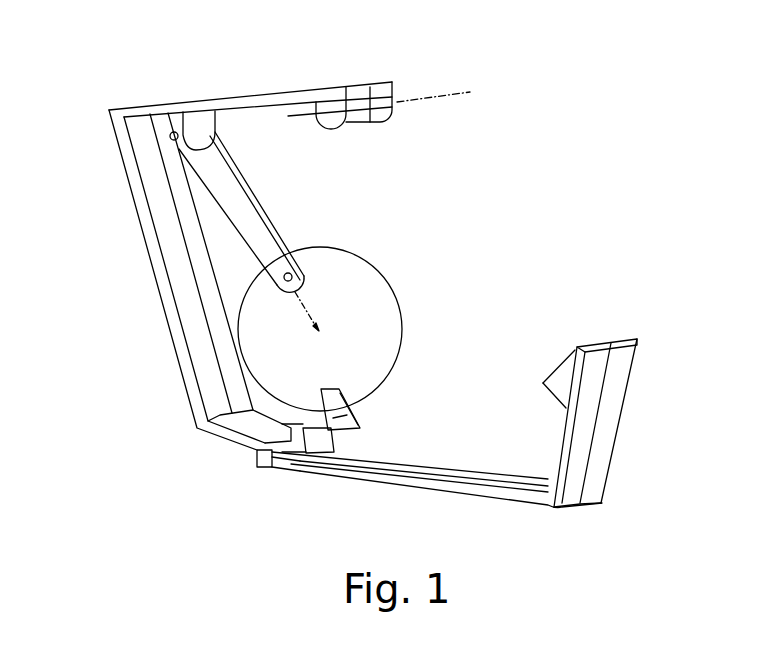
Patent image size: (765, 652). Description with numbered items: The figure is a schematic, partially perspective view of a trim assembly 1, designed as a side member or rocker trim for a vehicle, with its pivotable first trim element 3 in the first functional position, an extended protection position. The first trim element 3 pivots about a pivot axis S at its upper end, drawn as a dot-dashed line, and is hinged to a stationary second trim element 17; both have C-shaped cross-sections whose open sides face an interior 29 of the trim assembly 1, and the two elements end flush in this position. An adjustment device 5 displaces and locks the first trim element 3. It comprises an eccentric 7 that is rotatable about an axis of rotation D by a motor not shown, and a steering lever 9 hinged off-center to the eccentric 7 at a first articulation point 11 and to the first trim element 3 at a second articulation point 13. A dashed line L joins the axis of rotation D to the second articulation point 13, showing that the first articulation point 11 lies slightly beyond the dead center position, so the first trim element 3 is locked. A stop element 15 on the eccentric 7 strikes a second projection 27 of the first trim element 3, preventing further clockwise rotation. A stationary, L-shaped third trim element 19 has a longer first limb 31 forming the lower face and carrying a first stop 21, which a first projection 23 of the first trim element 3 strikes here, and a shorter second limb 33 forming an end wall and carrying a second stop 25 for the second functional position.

The trim assembly 1 is at (500, 104).
The first trim element 3 is at (143, 232).
The adjustment device 5 is at (405, 238).
The eccentric 7 is at (395, 280).
The steering lever 9 is at (222, 136).
The first articulation point 11 is at (304, 252).
The second articulation point 13 is at (173, 131).
The stop element 15 is at (360, 418).
The second trim element 17 is at (383, 83).
The third trim element 19 is at (618, 331).
The first stop 21 is at (257, 455).
The first projection 23 is at (277, 470).
The second stop 25 is at (553, 370).
The second projection 27 is at (337, 478).
The interior 29 is at (505, 258).
The first limb 31 is at (462, 485).
The second limb 33 is at (565, 440).
The pivot axis S is at (458, 92).
The dashed line L is at (220, 180).
The axis of rotation D is at (321, 331).